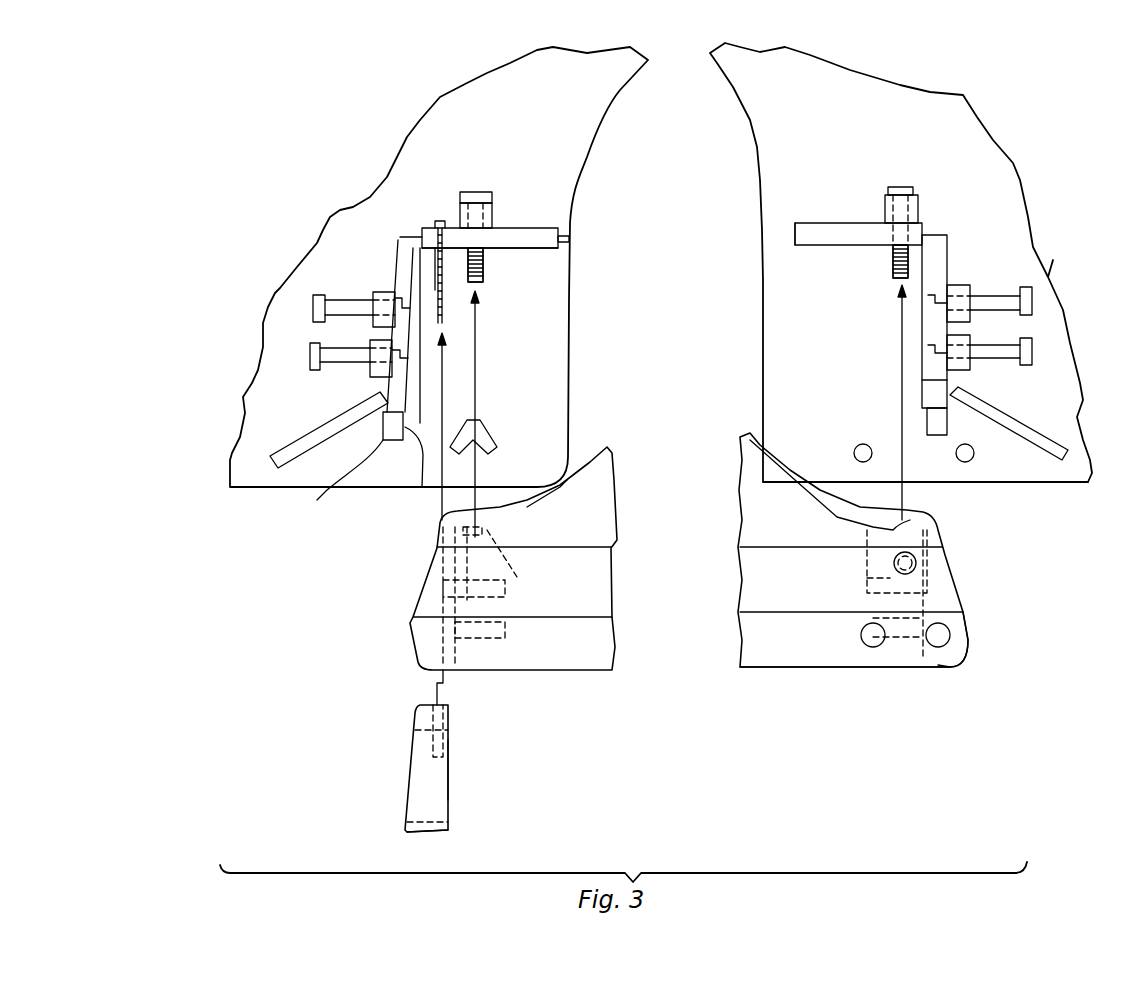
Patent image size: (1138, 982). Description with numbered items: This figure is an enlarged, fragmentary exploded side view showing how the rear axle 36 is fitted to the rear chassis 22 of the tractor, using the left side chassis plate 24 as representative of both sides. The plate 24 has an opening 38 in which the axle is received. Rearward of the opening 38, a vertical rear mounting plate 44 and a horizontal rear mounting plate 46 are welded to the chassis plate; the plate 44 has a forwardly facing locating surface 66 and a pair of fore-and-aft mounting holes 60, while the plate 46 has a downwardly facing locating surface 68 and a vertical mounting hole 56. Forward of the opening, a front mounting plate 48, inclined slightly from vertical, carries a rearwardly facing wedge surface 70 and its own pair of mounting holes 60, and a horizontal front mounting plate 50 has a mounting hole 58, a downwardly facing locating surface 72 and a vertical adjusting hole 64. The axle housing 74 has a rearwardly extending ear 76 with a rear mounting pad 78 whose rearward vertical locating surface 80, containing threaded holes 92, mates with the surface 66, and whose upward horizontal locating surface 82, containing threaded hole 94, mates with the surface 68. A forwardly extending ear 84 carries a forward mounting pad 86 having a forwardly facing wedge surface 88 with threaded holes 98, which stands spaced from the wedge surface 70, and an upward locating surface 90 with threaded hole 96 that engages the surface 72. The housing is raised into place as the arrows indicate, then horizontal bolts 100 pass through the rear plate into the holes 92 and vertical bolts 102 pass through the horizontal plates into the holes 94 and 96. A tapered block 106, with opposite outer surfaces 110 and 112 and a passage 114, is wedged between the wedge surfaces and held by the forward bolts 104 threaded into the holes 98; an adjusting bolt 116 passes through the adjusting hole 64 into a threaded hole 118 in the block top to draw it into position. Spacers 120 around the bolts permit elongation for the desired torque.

The rear chassis 22 is at (1086, 475).
The left side chassis plate 24 is at (963, 95).
The rear axle 36 is at (961, 658).
The opening 38 is at (672, 365).
The rear mounting plate 44 is at (947, 250).
The horizontal rear mounting plate 46 is at (810, 223).
The front mounting plate 48 is at (329, 463).
The horizontal front mounting plate 50 is at (573, 240).
The mounting hole 56 is at (893, 250).
The mounting hole 58 is at (478, 246).
The mounting holes 60 is at (415, 283).
The adjusting hole 64 is at (432, 237).
The locating surface 66 is at (927, 388).
The locating surface 68 is at (810, 245).
The wedge surface 70 is at (422, 487).
The locating surface 72 is at (547, 250).
The axle housing 74 is at (820, 667).
The rearwardly extending ear 76 is at (965, 600).
The rear mounting pad 78 is at (930, 653).
The locating surface 80 is at (927, 563).
The locating surface 82 is at (917, 520).
The forwardly extending ear 84 is at (413, 625).
The forward mounting pad 86 is at (452, 670).
The wedge surface 88 is at (455, 573).
The locating surface 90 is at (497, 527).
The threaded holes 92 is at (920, 580).
The threaded hole 94 is at (893, 528).
The threaded hole 96 is at (477, 533).
The threaded holes 98 is at (453, 580).
The bolts 100 is at (1032, 300).
The bolts 102 is at (475, 192).
The bolts 104 is at (370, 352).
The tapered block 106 is at (449, 831).
The outer surface 110 is at (407, 792).
The outer surface 112 is at (450, 798).
The passage 114 is at (437, 775).
The adjusting bolt 116 is at (440, 222).
The threaded hole 118 is at (442, 742).
The spacers 120 is at (492, 213).